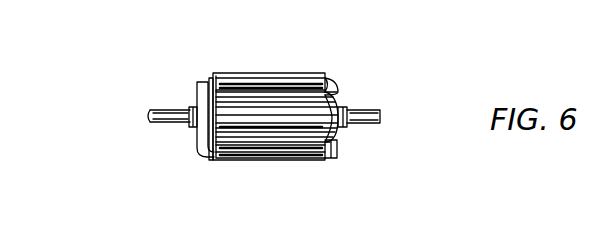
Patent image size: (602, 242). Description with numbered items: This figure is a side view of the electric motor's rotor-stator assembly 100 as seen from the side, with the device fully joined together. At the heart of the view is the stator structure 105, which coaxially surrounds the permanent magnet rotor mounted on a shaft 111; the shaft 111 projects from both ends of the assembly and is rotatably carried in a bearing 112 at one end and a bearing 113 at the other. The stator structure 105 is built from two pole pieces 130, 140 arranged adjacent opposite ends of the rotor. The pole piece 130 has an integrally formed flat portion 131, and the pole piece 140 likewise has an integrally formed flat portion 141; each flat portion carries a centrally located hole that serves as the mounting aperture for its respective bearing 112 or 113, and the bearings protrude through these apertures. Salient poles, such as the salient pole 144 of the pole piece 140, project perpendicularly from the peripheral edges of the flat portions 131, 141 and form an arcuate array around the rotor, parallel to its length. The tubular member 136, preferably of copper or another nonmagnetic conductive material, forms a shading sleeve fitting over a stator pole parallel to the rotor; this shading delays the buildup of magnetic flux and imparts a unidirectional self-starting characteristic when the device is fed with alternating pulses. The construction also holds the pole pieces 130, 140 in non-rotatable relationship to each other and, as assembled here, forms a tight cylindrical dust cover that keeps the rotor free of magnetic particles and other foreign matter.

The rotor-stator assembly 100 is at (364, 138).
The stator structure 105 is at (248, 163).
The shaft 111 is at (150, 116).
The bearing 112 is at (195, 105).
The bearing 113 is at (352, 103).
The pole piece 130 is at (196, 157).
The flat portion 131 is at (203, 82).
The tubular member 136 is at (280, 73).
The pole piece 140 is at (338, 74).
The flat portion 141 is at (332, 150).
The salient pole 144 is at (343, 90).